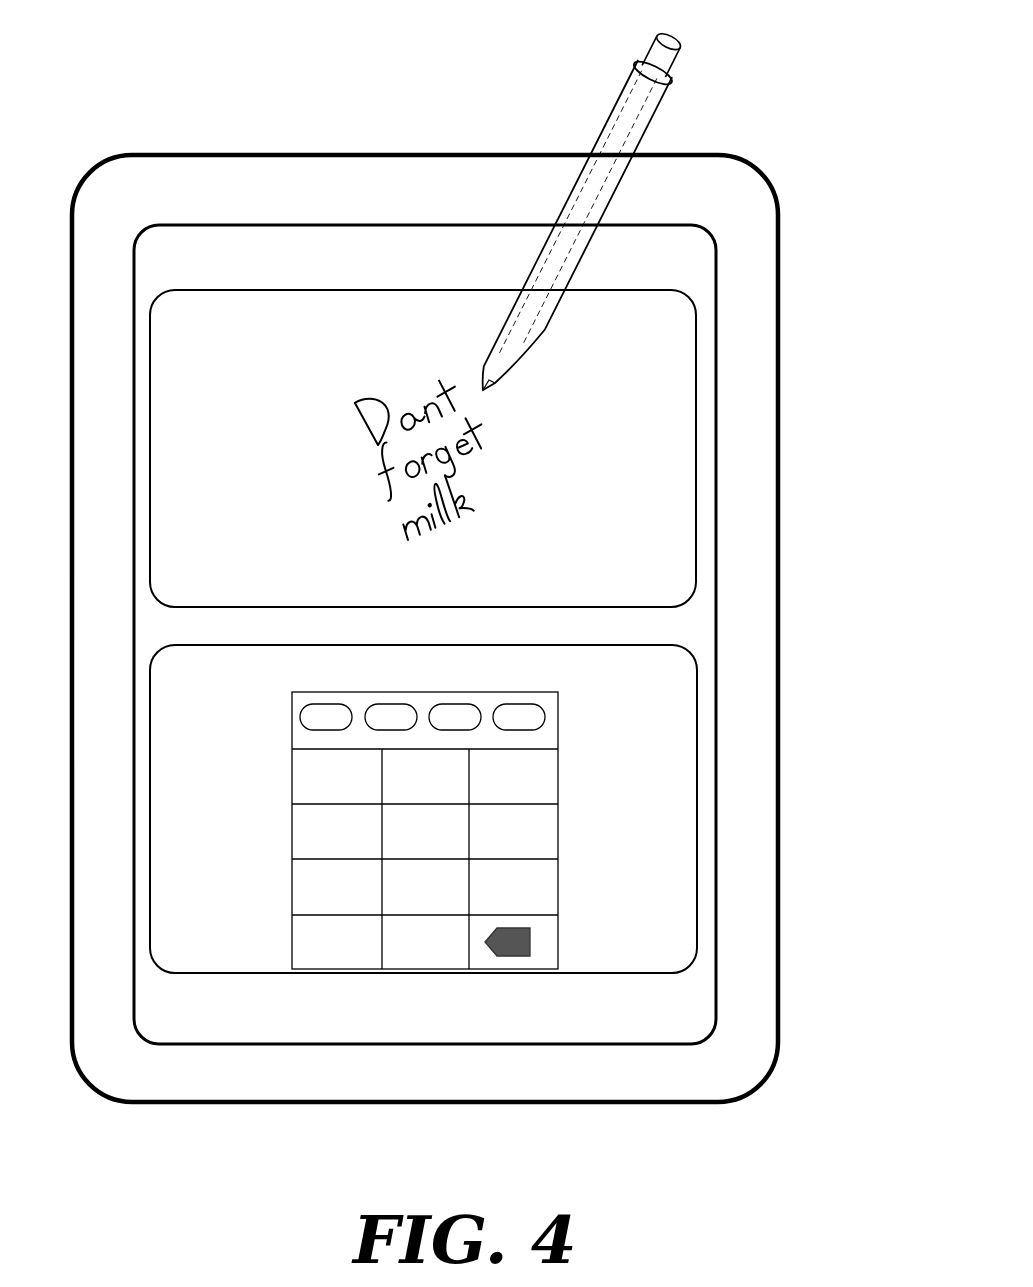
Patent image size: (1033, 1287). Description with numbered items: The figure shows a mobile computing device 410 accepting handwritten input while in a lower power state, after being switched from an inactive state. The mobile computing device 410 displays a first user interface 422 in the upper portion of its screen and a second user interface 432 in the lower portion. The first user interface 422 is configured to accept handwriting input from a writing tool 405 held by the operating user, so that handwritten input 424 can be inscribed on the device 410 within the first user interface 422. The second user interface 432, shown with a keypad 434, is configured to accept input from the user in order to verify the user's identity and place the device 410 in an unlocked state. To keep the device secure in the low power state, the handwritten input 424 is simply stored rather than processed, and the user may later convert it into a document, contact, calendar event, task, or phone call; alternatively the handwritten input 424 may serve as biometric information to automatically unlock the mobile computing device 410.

The writing tool 405 is at (611, 122).
The mobile computing device 410 is at (356, 155).
The first user interface 422 is at (233, 290).
The handwritten input 424 is at (516, 460).
The second user interface 432 is at (237, 645).
The keypad lock screen 434 is at (585, 768).